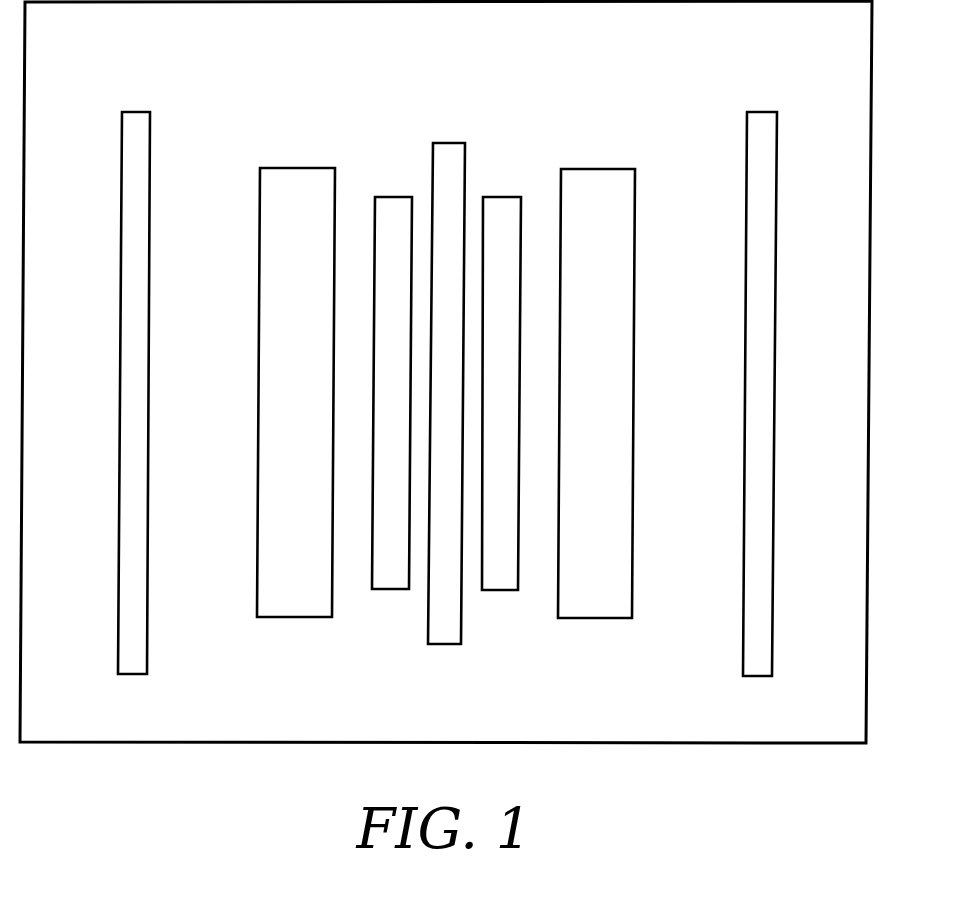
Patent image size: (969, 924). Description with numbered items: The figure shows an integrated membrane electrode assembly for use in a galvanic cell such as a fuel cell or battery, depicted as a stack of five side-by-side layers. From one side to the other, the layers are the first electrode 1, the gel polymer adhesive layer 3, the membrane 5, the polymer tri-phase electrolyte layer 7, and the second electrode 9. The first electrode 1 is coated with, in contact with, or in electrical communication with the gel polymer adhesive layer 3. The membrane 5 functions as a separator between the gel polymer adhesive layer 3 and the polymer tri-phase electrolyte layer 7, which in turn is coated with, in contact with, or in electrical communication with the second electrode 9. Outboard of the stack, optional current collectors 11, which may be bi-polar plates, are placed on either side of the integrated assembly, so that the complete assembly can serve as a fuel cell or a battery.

The first electrode 1 is at (299, 168).
The gel polymer adhesive layer 3 is at (395, 197).
The membrane 5 is at (449, 143).
The polymer tri-phase electrolyte layer 7 is at (503, 197).
The second electrode 9 is at (600, 169).
The current collectors 11 is at (137, 112).